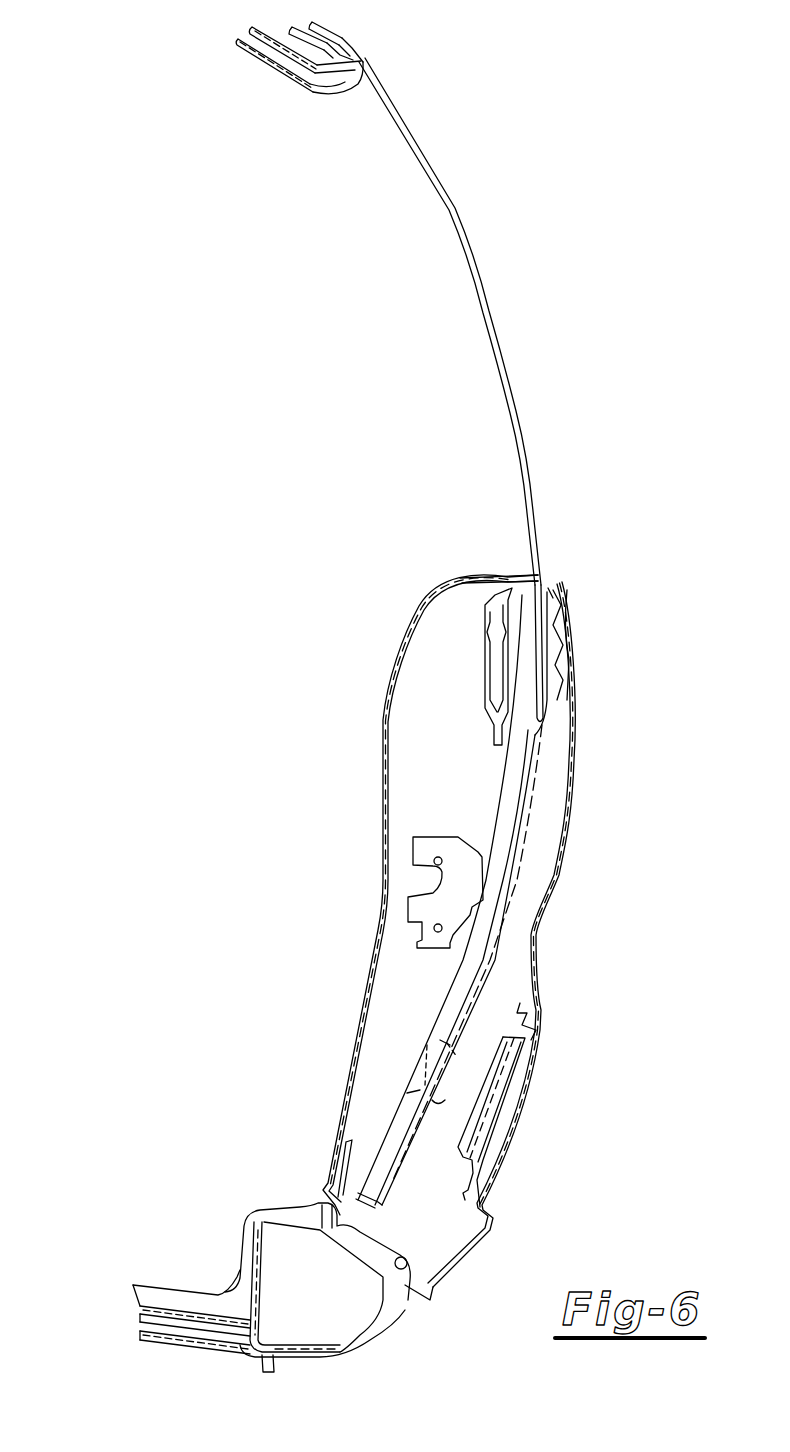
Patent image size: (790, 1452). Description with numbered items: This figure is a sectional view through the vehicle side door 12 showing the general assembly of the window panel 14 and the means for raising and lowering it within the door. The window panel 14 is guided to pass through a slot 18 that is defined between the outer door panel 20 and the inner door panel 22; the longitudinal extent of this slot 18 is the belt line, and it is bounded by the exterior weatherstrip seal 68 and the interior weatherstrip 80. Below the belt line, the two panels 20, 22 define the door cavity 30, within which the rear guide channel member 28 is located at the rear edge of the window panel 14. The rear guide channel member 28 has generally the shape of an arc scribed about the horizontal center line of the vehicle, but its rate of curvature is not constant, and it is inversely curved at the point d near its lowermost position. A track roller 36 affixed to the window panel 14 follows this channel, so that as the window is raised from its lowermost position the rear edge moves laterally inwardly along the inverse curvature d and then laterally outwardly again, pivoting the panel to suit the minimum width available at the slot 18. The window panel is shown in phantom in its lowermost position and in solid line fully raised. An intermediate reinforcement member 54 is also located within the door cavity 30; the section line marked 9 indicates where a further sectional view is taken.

The window panel 14 is at (452, 208).
The vehicle side door 12 is at (461, 428).
The outer door panel 20 is at (568, 836).
The inner door panel 22 is at (383, 762).
The track roller 36 is at (510, 577).
The interior weatherstrip 80 is at (520, 575).
The slot 18 is at (550, 577).
The upper weatherstrip seal 68 is at (555, 580).
The intermediate reinforcement member 54 is at (485, 634).
The section line 9- 9 is at (459, 680).
The door cavity 30 is at (456, 774).
The rear guide channel member 28 is at (496, 826).
The point of inverse curvature d is at (437, 1023).